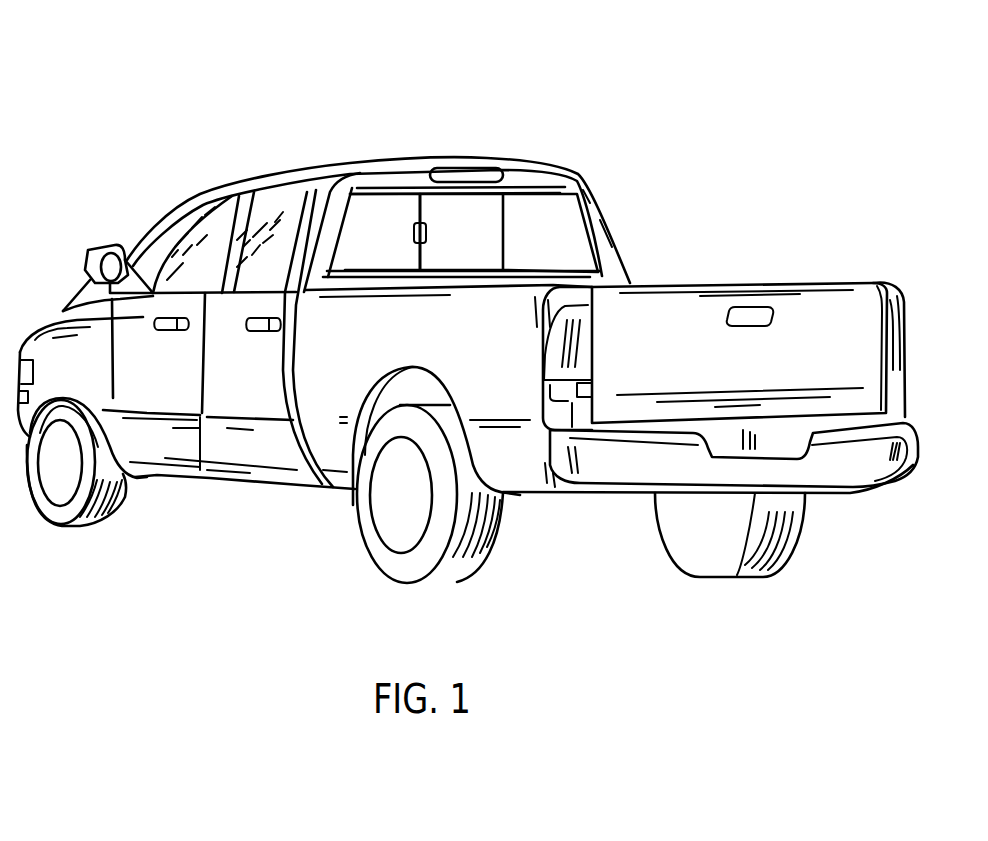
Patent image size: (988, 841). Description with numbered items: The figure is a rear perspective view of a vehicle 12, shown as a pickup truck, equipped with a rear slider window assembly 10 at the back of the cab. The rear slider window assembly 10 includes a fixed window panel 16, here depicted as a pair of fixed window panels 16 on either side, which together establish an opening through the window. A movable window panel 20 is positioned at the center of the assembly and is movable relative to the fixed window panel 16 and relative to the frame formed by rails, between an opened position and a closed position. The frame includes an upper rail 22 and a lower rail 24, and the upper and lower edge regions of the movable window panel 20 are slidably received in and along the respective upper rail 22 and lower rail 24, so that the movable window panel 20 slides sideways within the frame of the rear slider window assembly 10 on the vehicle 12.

The rear slider window assembly 10 is at (551, 226).
The vehicle 12 is at (267, 106).
The fixed window panel 16 is at (378, 207).
The movable window panel 20 is at (480, 207).
The upper rail 22 is at (393, 185).
The lower rail 24 is at (368, 272).